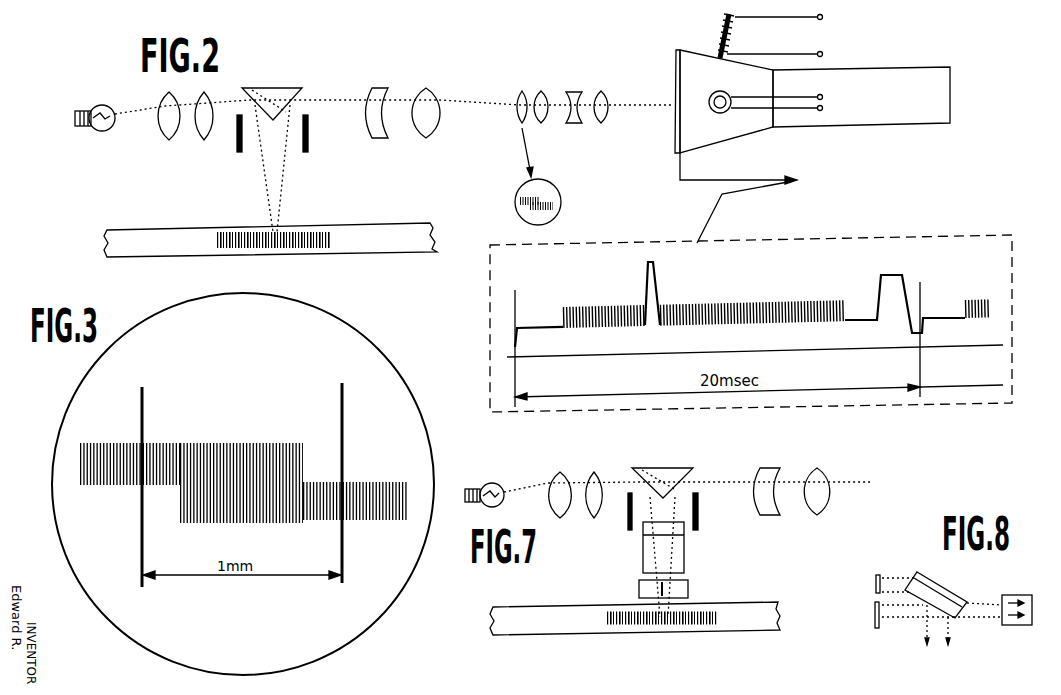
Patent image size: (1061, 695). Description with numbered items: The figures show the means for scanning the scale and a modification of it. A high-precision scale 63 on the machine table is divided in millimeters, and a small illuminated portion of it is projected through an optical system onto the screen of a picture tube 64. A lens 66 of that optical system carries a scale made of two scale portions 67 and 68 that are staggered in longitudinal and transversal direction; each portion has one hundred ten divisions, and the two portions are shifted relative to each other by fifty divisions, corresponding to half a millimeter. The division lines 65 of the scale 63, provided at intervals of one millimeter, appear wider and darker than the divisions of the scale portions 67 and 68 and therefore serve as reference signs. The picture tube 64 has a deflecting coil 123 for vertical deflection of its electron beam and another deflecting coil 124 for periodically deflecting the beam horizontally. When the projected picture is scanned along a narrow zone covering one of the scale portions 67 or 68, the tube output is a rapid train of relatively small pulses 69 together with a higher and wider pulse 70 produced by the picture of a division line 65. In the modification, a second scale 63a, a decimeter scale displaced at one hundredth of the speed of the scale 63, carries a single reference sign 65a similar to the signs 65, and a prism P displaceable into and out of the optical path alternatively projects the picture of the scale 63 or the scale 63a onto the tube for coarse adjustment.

In FIG. 2, the high-precision scale 63 is at (270, 236).
In FIG. 7, the high-precision scale 63 is at (635, 620).
In FIG. 8, the high-precision scale 63 is at (873, 613).
In FIG. 2, the division lines 65 is at (324, 248).
In FIG. 3, the division lines 65 is at (144, 397).
In FIG. 7, the division lines 65 is at (699, 624).
In FIG. 2, the lens 66 is at (522, 90).
In FIG. 2, the scale portion 67 is at (520, 197).
In FIG. 3, the scale portion 67 is at (120, 475).
In FIG. 2, the scale portion 68 is at (555, 207).
In FIG. 3, the scale portion 68 is at (367, 492).
In FIG. 2, the picture tube 64 is at (805, 83).
In FIG. 3, the picture tube 64 is at (403, 375).
In FIG. 2, the deflecting coil 123 is at (716, 111).
In FIG. 2, the deflecting coil 124 is at (733, 43).
In FIG. 2, the pulses 69 is at (592, 304).
In FIG. 2, the reference pulse 70 is at (661, 286).
In FIG. 7, the prism P is at (648, 555).
In FIG. 8, the prism P is at (945, 588).
In FIG. 7, the second scale 63a is at (683, 590).
In FIG. 8, the second scale 63a is at (874, 585).
In FIG. 7, the reference sign 65a is at (660, 587).